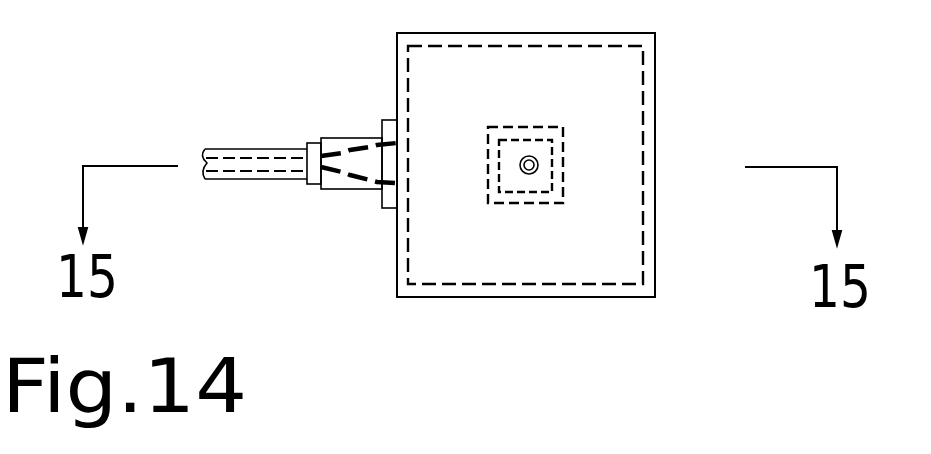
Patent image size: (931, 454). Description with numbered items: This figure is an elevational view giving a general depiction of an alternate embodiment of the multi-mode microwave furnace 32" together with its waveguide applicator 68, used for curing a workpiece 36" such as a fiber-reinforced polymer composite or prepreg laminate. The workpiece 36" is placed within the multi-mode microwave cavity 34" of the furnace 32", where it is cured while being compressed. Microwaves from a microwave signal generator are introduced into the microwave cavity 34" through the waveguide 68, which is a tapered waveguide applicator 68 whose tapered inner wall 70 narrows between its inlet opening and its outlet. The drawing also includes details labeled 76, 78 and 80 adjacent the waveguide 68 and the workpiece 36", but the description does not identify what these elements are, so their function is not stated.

The multi-mode microwave furnace 32 is at (655, 78).
The multi-mode microwave cavity 34 is at (643, 160).
The workpiece 36 is at (534, 198).
The terminal 78 is at (522, 174).
The contact pin 80 is at (520, 166).
The waveguide applicator 68 is at (325, 190).
The first conductor 76 is at (343, 150).
The tapered inner wall 70 is at (347, 190).